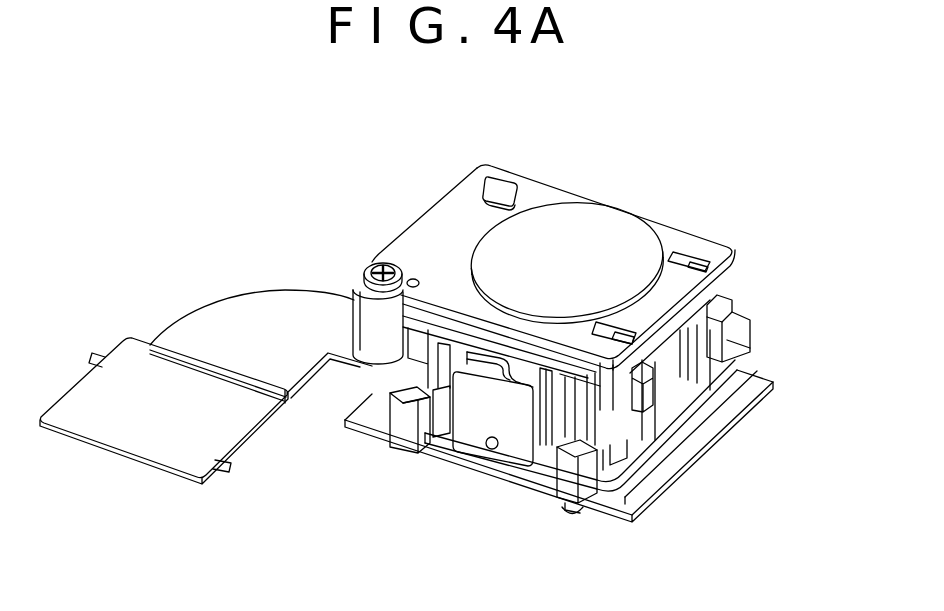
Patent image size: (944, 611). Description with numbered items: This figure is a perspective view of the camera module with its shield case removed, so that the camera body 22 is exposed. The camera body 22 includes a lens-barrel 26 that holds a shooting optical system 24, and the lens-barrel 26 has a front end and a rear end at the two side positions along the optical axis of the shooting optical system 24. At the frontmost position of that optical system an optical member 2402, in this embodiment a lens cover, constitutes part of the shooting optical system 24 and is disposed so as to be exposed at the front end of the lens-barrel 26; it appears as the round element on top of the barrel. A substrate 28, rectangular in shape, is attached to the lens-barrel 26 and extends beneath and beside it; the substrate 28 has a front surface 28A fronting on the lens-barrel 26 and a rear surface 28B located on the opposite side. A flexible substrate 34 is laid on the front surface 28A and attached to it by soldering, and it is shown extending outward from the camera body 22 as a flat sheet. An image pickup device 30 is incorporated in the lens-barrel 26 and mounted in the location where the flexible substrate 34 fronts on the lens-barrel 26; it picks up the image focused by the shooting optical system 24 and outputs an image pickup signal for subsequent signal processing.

The camera body 22 is at (296, 197).
The shooting optical system 24 is at (552, 240).
The optical member 2402 is at (614, 237).
The lens-barrel 26 is at (698, 245).
The substrate 28 is at (698, 444).
The front surface 28A is at (740, 398).
The rear surface 28B is at (730, 432).
The image pickup device 30 is at (468, 467).
The flexible substrate 34 is at (235, 318).